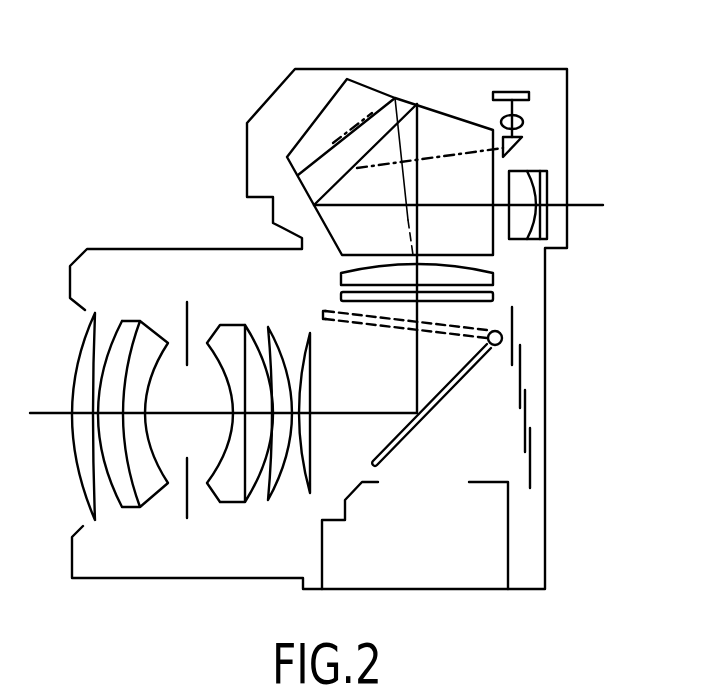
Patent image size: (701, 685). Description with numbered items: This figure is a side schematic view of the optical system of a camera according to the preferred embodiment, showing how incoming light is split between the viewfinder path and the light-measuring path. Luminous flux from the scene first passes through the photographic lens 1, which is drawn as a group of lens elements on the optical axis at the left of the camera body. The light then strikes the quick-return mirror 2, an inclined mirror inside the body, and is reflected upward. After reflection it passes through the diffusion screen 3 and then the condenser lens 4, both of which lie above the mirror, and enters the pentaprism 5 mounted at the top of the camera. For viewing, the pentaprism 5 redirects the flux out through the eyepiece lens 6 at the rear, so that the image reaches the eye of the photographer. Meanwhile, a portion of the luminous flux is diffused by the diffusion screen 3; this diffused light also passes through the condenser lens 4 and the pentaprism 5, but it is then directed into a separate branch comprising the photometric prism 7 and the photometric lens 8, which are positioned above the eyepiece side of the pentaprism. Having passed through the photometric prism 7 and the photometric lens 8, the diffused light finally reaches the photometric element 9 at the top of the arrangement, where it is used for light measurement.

The photographic lens 1 is at (78, 369).
The quick-return mirror 2 is at (440, 405).
The diffusion screen 3 is at (493, 293).
The condenser lens 4 is at (493, 273).
The pentaprism 5 is at (365, 100).
The eyepiece lens 6 is at (538, 183).
The photometric prism 7 is at (515, 141).
The photometric lens 8 is at (522, 118).
The photometric element 9 is at (508, 92).